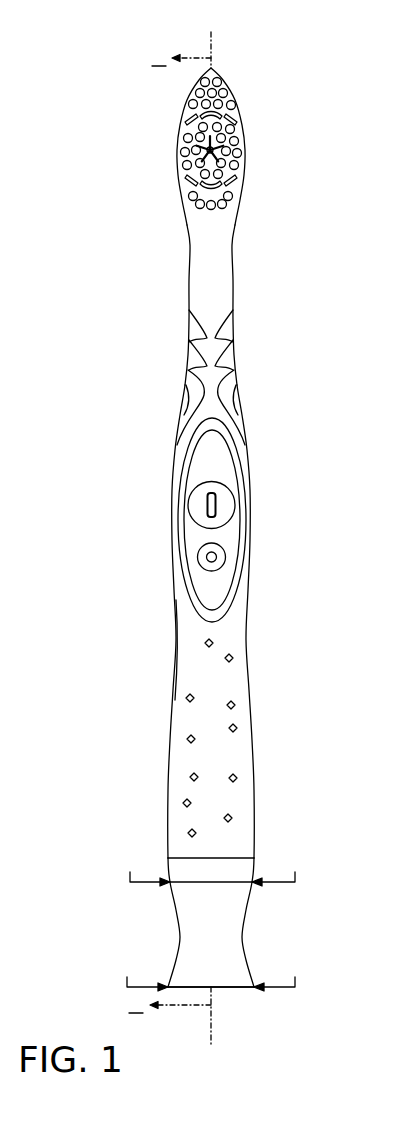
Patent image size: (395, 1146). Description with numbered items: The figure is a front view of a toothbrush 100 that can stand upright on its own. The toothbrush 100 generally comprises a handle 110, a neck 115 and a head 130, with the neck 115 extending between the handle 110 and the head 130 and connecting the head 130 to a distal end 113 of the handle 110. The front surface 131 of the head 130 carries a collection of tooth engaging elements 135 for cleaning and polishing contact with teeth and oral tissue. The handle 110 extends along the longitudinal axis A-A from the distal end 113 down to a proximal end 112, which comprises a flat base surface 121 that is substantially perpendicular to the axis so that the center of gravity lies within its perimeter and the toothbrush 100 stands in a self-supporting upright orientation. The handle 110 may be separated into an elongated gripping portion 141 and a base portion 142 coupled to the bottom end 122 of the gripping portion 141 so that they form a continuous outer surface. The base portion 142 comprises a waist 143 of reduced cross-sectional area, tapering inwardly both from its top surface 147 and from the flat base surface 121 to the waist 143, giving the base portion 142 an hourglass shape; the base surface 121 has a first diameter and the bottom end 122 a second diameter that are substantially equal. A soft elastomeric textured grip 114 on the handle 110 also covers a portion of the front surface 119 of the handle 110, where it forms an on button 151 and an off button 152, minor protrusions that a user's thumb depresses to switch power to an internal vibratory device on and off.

The toothbrush 100 is at (191, 542).
The head 130 is at (228, 146).
The front surface 131 is at (181, 120).
The tooth engaging elements 135 is at (182, 165).
The neck 115 is at (257, 328).
The distal end 113 is at (230, 392).
The handle 110 is at (198, 721).
The front surface 119 is at (257, 499).
The on button 151 is at (225, 505).
The off button 152 is at (222, 559).
The elongated gripping portion 141 is at (165, 497).
The textured grip 114 is at (232, 645).
The top surface 147 is at (237, 880).
The bottom end 122 is at (222, 883).
The base portion 142 is at (164, 908).
The waist 143 is at (175, 925).
The proximal end 112 is at (248, 990).
The flat base surface 121 is at (222, 990).